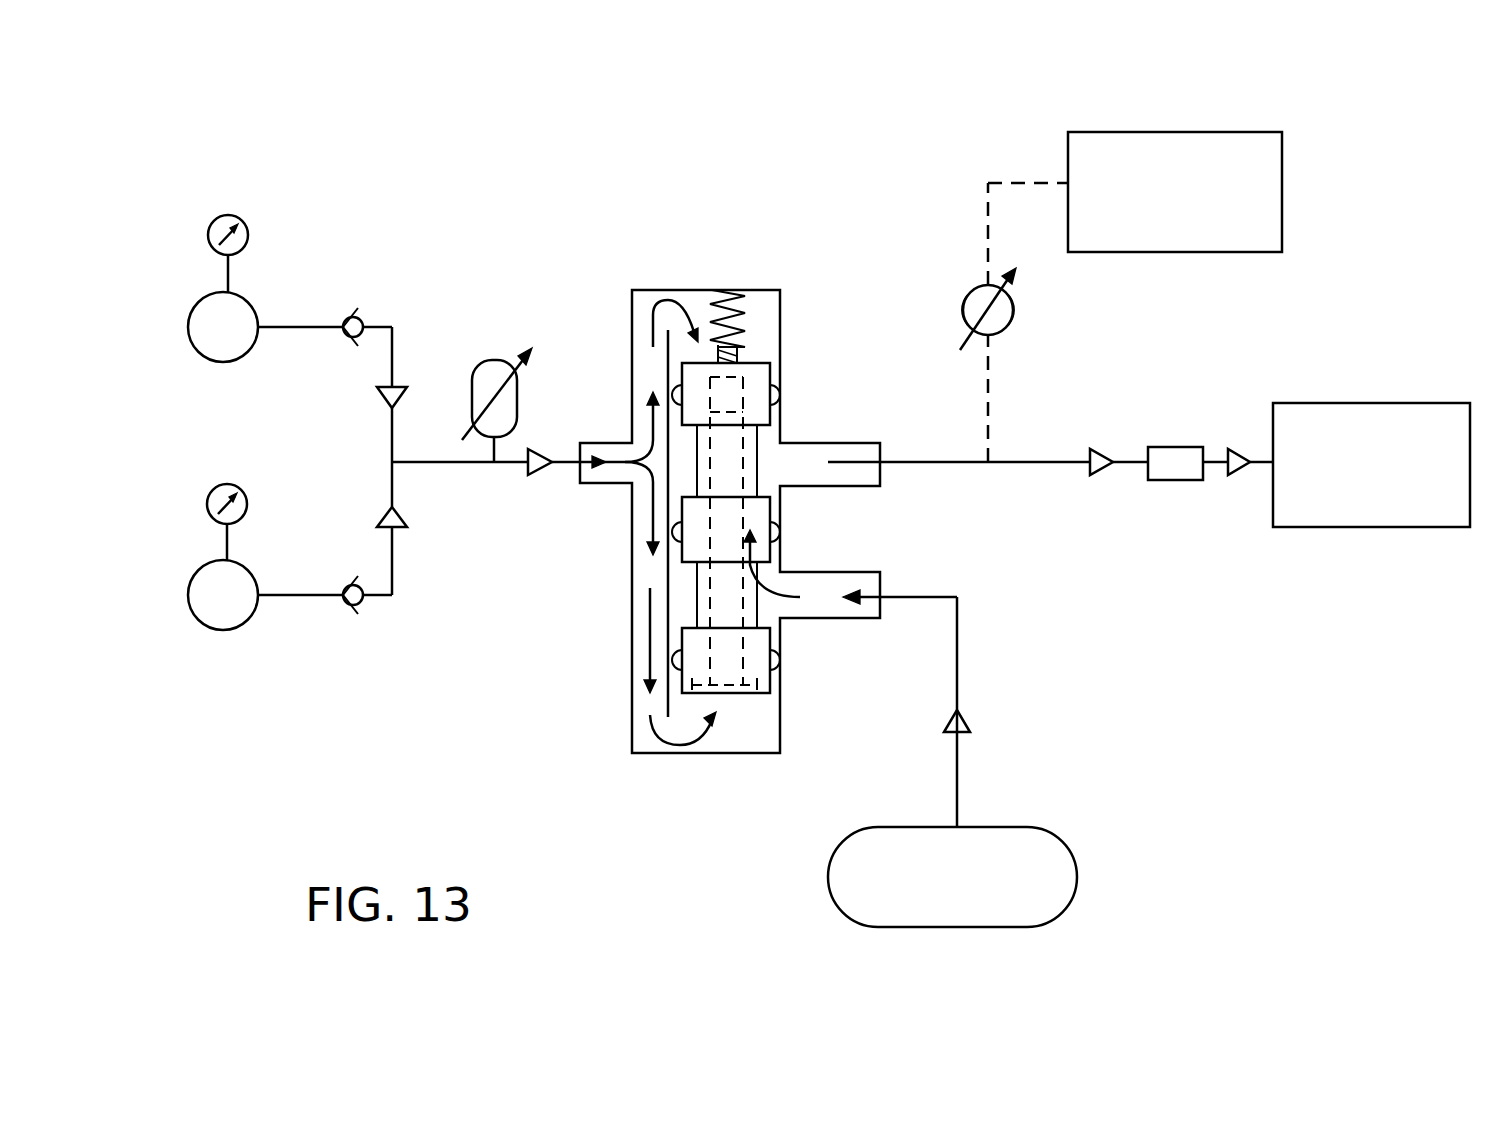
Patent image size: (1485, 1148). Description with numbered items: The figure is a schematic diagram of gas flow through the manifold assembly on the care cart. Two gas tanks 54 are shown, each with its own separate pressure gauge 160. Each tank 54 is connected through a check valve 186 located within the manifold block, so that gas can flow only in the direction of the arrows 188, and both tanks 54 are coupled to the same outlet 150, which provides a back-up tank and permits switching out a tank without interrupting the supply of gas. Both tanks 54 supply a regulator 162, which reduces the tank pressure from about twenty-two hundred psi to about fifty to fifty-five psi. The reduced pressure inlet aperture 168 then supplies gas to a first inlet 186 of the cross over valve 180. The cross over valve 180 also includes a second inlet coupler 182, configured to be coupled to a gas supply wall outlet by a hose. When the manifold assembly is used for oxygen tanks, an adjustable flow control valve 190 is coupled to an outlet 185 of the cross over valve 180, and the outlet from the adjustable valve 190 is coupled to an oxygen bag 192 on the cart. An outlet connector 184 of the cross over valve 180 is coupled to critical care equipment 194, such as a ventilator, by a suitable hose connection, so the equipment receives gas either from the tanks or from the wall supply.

The tank 54 is at (207, 337).
The pressure gauge 160 is at (246, 232).
The check valve 186 is at (342, 310).
The arrows 188 is at (382, 403).
The outlet 150 is at (423, 462).
The regulator 162 is at (493, 362).
The inlet aperture 168 is at (572, 467).
The cross over valve 180 is at (650, 280).
The outlet 185 is at (822, 450).
The second inlet coupler 182 is at (852, 620).
The outlet connector 184 is at (1172, 447).
The adjustable flow control valve 190 is at (1013, 312).
The oxygen bag 192 is at (1282, 183).
The critical care equipment 194 is at (1343, 527).